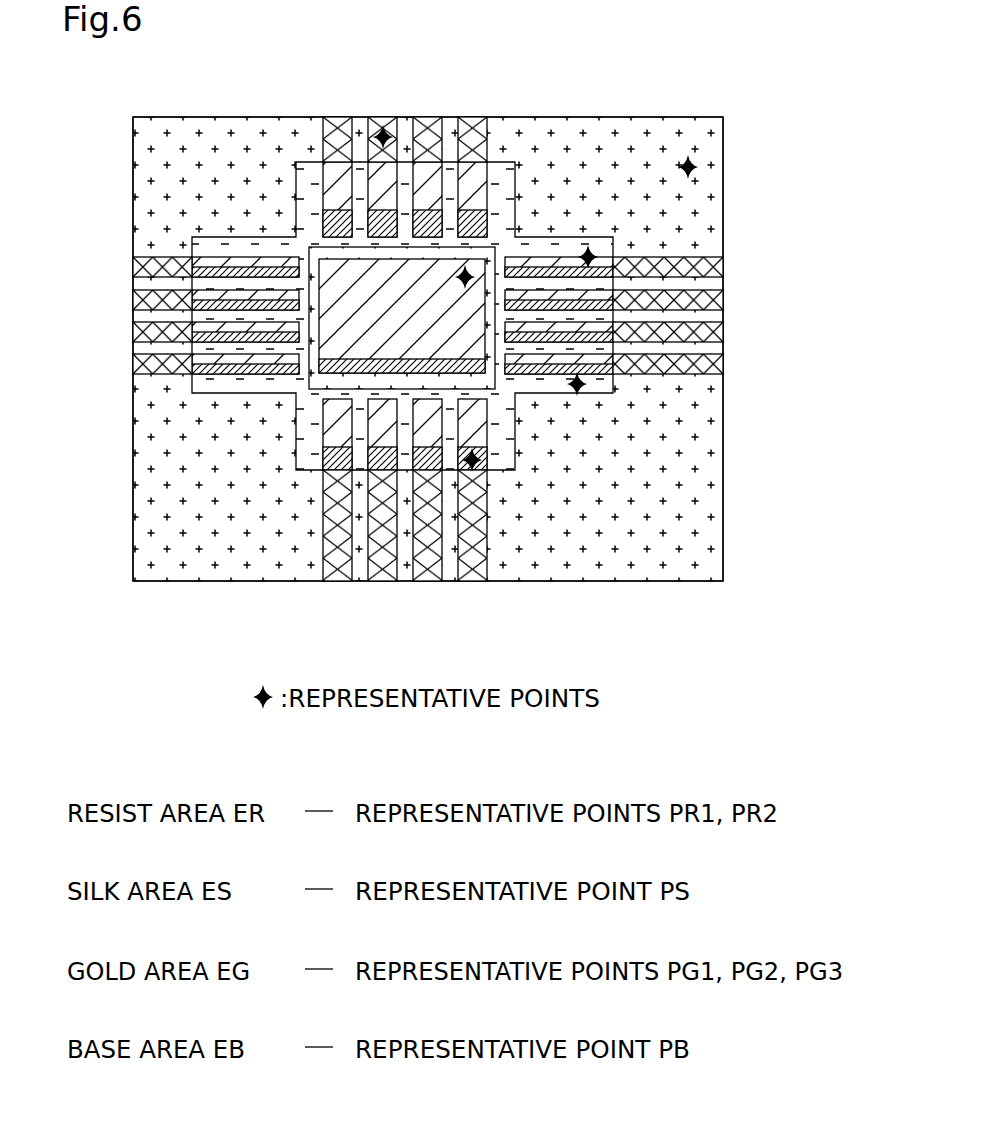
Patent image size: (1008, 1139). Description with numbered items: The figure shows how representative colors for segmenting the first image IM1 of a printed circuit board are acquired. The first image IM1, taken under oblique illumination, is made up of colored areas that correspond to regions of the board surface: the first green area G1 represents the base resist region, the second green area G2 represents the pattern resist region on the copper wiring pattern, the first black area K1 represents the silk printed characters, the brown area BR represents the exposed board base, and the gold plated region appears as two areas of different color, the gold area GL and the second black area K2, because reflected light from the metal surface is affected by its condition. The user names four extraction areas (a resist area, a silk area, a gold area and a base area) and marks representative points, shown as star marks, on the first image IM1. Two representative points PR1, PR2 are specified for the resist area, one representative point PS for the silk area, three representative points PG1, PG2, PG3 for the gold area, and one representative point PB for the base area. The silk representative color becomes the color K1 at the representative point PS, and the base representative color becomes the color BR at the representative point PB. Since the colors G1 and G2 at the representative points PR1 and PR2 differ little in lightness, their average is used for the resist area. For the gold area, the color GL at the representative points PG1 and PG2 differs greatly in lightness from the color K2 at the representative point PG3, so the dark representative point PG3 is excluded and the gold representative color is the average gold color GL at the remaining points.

The first image IM1 is at (678, 117).
The first green area G1 is at (563, 152).
The second green area G2 is at (167, 367).
The gold area GL is at (408, 338).
The second black area K2 is at (335, 222).
The first black area K1 is at (620, 518).
The brown area BR is at (525, 383).
The representative point PR1 is at (690, 167).
The representative point PR2 is at (383, 134).
The representative point PG1 is at (465, 275).
The representative point PG2 is at (590, 257).
The representative point PG3 is at (472, 462).
The representative point PB is at (578, 385).
The representative point PS is at (643, 513).